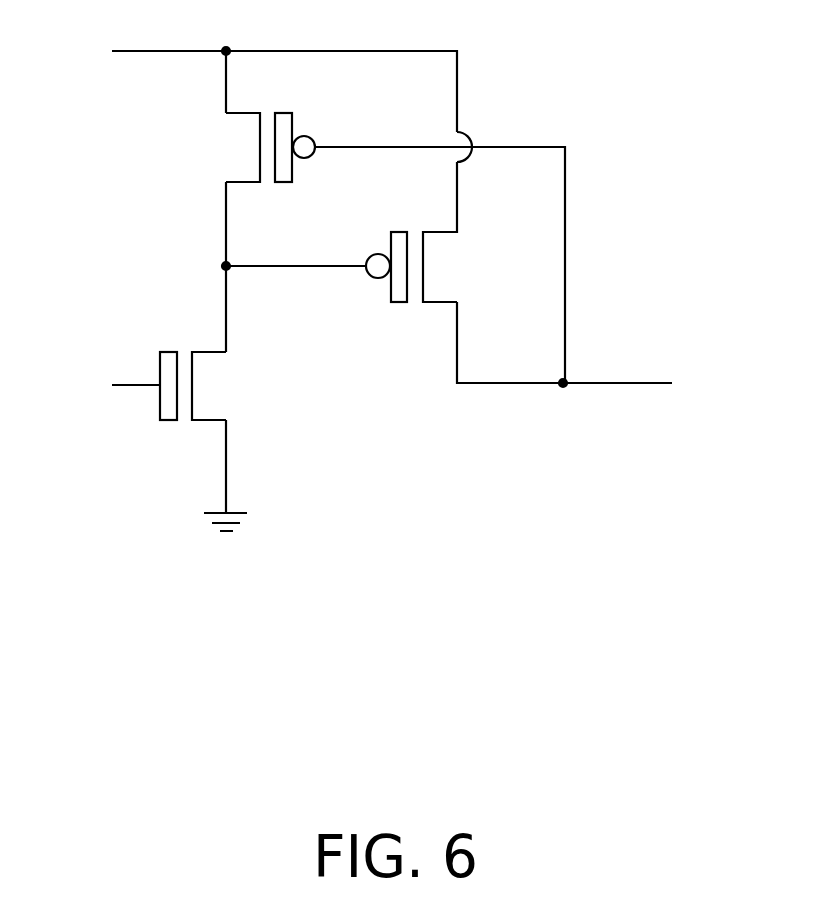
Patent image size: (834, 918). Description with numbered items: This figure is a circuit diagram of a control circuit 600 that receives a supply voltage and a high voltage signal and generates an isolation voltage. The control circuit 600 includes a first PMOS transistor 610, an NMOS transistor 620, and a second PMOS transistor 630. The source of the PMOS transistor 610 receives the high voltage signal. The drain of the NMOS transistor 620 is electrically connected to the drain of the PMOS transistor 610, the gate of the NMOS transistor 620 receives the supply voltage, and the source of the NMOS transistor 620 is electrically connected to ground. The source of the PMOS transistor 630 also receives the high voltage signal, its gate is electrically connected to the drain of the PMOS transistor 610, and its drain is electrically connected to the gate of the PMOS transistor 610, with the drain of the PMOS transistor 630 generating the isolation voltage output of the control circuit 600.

The control circuit 600 is at (426, 320).
The PMOS transistor 610 is at (270, 176).
The NMOS transistor 620 is at (184, 418).
The PMOS transistor 630 is at (411, 298).